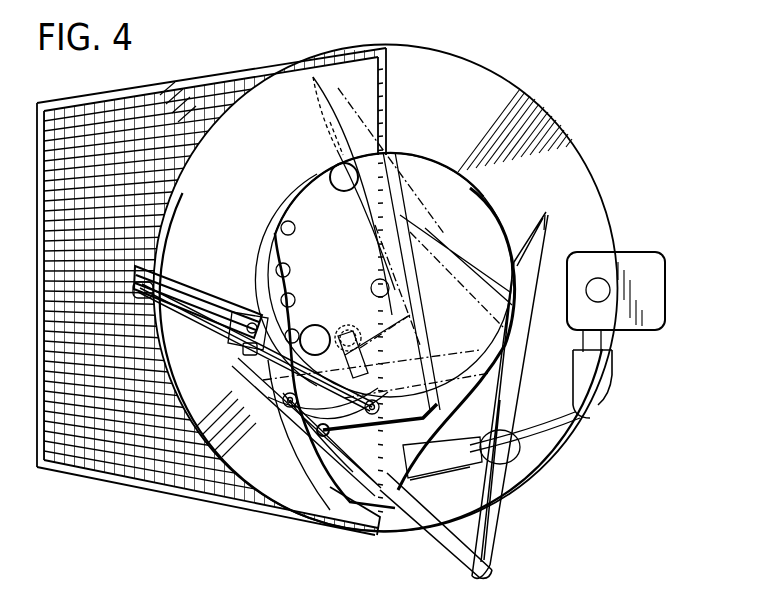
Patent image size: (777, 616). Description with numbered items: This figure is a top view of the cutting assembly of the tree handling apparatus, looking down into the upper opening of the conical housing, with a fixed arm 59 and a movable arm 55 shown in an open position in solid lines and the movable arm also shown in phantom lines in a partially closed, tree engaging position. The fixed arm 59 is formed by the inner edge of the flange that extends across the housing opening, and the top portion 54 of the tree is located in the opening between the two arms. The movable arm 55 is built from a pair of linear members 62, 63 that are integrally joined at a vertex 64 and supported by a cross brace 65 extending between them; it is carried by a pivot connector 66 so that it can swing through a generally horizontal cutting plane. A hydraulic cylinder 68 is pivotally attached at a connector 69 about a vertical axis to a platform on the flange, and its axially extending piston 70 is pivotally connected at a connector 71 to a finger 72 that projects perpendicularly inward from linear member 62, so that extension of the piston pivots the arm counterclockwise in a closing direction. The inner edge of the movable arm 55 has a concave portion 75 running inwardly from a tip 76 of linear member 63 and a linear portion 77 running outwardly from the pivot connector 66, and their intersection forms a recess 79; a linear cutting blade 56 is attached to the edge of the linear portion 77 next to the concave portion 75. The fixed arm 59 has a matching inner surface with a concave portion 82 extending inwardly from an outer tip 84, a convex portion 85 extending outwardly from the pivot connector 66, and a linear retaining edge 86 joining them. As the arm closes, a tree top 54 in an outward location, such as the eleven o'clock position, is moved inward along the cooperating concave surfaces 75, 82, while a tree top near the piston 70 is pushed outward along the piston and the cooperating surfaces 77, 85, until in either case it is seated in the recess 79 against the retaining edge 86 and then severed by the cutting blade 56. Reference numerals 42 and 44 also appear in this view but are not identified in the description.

The housing 42 is at (326, 462).
The actuator 44 is at (664, 266).
The top portion 54 is at (333, 186).
The movable arm 55 is at (493, 513).
The cutting blade 56 is at (330, 520).
The fixed arm 59 is at (278, 262).
The linear member 62 is at (450, 552).
The linear member 63 is at (555, 437).
The vertex 64 is at (483, 567).
The cross brace 65 is at (548, 452).
The pivot connector 66 is at (290, 408).
The hydraulic cylinder 68 is at (205, 268).
The connector 69 is at (238, 336).
The piston 70 is at (240, 362).
The connector 71 is at (318, 443).
The finger 72 is at (283, 518).
The concave portion 75 is at (480, 302).
The tip 76 is at (550, 228).
The linear portion 77 is at (318, 430).
The recess 79 is at (400, 520).
The concave portion 82 is at (281, 224).
The outer tip 84 is at (338, 166).
The convex portion 85 is at (283, 294).
The linear retaining edge 86 is at (284, 262).